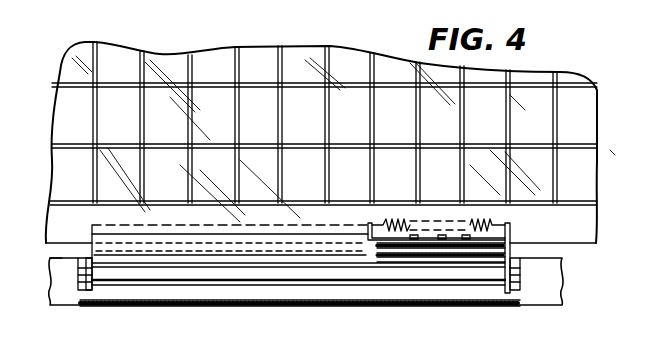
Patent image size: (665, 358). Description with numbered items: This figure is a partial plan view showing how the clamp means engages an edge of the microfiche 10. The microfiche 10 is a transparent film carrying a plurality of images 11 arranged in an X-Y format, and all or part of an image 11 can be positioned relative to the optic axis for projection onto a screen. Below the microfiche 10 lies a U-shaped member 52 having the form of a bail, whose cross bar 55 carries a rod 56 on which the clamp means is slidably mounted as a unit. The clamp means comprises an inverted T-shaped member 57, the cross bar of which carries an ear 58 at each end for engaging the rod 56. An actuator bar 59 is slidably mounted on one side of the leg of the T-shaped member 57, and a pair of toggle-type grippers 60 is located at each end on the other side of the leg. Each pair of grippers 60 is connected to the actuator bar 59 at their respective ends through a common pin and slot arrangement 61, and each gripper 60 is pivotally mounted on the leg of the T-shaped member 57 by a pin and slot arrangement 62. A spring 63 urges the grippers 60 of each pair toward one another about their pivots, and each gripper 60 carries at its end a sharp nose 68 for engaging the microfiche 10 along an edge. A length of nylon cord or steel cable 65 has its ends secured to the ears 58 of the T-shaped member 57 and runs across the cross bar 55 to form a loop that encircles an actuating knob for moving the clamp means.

The microfiche 10 is at (585, 105).
The images 11 is at (262, 60).
The U-shaped member 52 is at (62, 316).
The cross bar 55 is at (542, 300).
The rod 56 is at (175, 296).
The inverted T-shaped member 57 is at (175, 225).
The ear 58 is at (93, 288).
The actuator bar 59 is at (226, 262).
The toggle-type grippers 60 is at (410, 247).
The pin and slot arrangement 61 is at (440, 236).
The pin and slot arrangement 62 is at (478, 258).
The spring 63 is at (485, 228).
The cable 65 is at (88, 268).
The sharp nose 68 is at (368, 225).